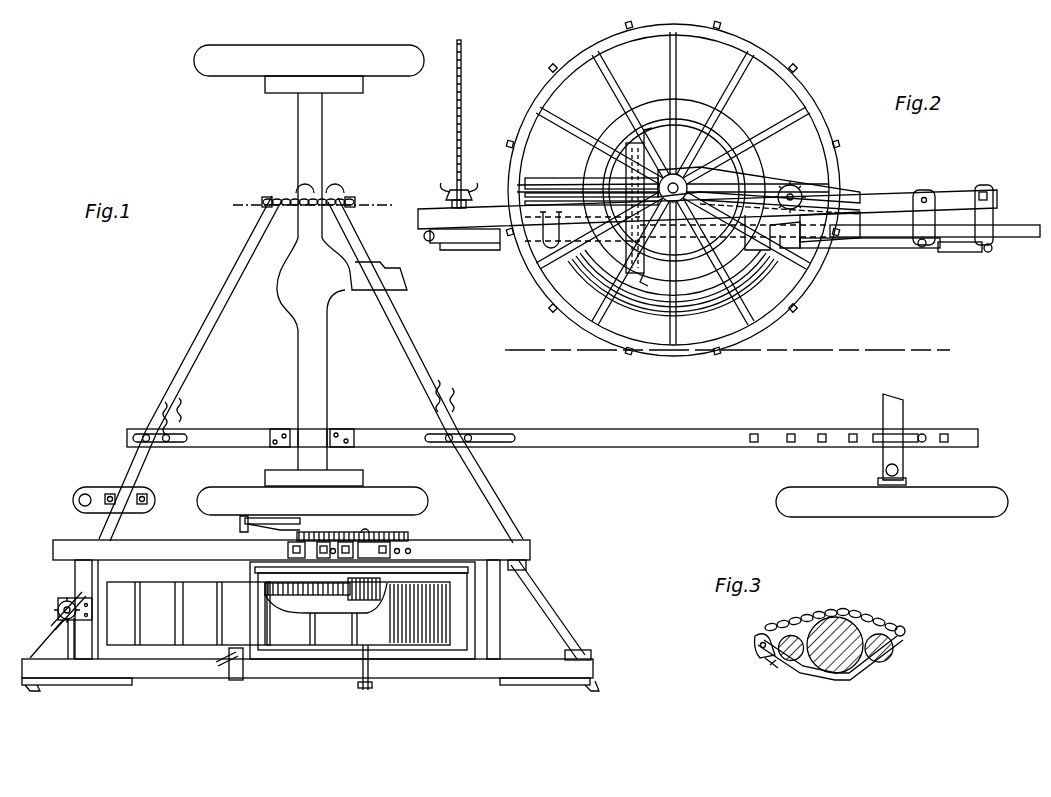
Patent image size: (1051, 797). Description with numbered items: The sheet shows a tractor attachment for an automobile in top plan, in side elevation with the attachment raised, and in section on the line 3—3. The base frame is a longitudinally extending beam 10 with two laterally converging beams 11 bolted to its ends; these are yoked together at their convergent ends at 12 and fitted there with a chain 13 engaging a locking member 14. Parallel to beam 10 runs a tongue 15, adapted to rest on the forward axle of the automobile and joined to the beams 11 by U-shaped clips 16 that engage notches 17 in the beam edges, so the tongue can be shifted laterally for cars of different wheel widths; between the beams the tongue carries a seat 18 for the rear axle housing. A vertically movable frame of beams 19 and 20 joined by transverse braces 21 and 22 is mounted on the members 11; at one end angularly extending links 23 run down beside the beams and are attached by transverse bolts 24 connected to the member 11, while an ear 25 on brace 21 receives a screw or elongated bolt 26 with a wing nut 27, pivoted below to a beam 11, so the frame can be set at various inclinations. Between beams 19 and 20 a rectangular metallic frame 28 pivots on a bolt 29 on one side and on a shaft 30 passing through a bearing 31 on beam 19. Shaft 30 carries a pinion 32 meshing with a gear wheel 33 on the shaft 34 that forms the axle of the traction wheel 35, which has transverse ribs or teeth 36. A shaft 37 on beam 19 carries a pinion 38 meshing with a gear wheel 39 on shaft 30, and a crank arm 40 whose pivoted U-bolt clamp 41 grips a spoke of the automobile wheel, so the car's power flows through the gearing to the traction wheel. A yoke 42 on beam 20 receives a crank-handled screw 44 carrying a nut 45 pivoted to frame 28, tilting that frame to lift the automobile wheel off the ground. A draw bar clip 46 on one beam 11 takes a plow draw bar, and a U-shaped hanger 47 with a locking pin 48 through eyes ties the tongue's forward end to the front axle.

In FIG. 1, the section line 3— 3 is at (314, 193).
In FIG. 1, the longitudinally extending beam 10 is at (104, 686).
In FIG. 2, the longitudinally extending beam 10 is at (480, 249).
In FIG. 1, the laterally converging beams 11 is at (208, 337).
In FIG. 2, the laterally converging beams 11 is at (510, 243).
In FIG. 3, the laterally converging beams 11 is at (797, 634).
In FIG. 1, the yoke 12 is at (337, 192).
In FIG. 3, the yoke 12 is at (830, 683).
In FIG. 1, the chain 13 is at (303, 192).
In FIG. 3, the chain 13 is at (848, 613).
In FIG. 1, the locking member 14 is at (268, 205).
In FIG. 3, the locking member 14 is at (760, 660).
In FIG. 1, the tongue 15 is at (643, 432).
In FIG. 2, the tongue 15 is at (1010, 236).
In FIG. 1, the U-shaped clips 16 is at (147, 433).
In FIG. 2, the U-shaped clips 16 is at (551, 248).
In FIG. 1, the notches 17 is at (180, 410).
In FIG. 1, the seat 18 is at (332, 428).
In FIG. 1, the beam 19 is at (163, 540).
In FIG. 1, the beam 20 is at (183, 672).
In FIG. 2, the beam 20 is at (895, 198).
In FIG. 1, the transverse brace 21 is at (80, 572).
In FIG. 1, the transverse brace 22 is at (498, 642).
In FIG. 1, the angularly extending links 23 is at (528, 568).
In FIG. 2, the angularly extending links 23 is at (914, 195).
In FIG. 2, the transverse bolts 24 is at (922, 248).
In FIG. 1, the ear 25 is at (58, 610).
In FIG. 1, the screw or elongated bolt 26 is at (52, 624).
In FIG. 2, the screw or elongated bolt 26 is at (457, 138).
In FIG. 1, the wing nut 27 is at (70, 630).
In FIG. 2, the wing nut 27 is at (476, 194).
In FIG. 1, the rectangular metallic frame 28 is at (460, 665).
In FIG. 2, the rectangular metallic frame 28 is at (848, 242).
In FIG. 1, the bolt 29 is at (362, 690).
In FIG. 2, the bolt 29 is at (810, 192).
In FIG. 1, the shaft 30 is at (370, 562).
In FIG. 1, the bearing 31 is at (410, 536).
In FIG. 1, the pinion 32 is at (360, 600).
In FIG. 2, the pinion 32 is at (770, 232).
In FIG. 1, the gear wheel 33 is at (305, 597).
In FIG. 2, the gear wheel 33 is at (690, 128).
In FIG. 1, the shaft 34 is at (262, 578).
In FIG. 2, the shaft 34 is at (676, 183).
In FIG. 1, the traction wheel 35 is at (160, 632).
In FIG. 2, the traction wheel 35 is at (782, 78).
In FIG. 1, the ribs or teeth 36 is at (137, 600).
In FIG. 2, the ribs or teeth 36 is at (580, 46).
In FIG. 1, the shaft 37 is at (318, 526).
In FIG. 1, the pinion 38 is at (330, 529).
In FIG. 2, the pinion 38 is at (600, 252).
In FIG. 1, the gear wheel 39 is at (378, 534).
In FIG. 2, the gear wheel 39 is at (800, 192).
In FIG. 1, the crank arm 40 is at (283, 518).
In FIG. 2, the crank arm 40 is at (645, 244).
In FIG. 1, the clamp 41 is at (240, 522).
In FIG. 1, the yoke 42 is at (230, 681).
In FIG. 2, the yoke 42 is at (572, 203).
In FIG. 2, the screw 44 is at (606, 176).
In FIG. 1, the nut 45 is at (246, 668).
In FIG. 2, the nut 45 is at (591, 169).
In FIG. 1, the draw bar clip 46 is at (93, 486).
In FIG. 1, the U-shaped hanger 47 is at (905, 436).
In FIG. 1, the locking pin 48 is at (917, 444).